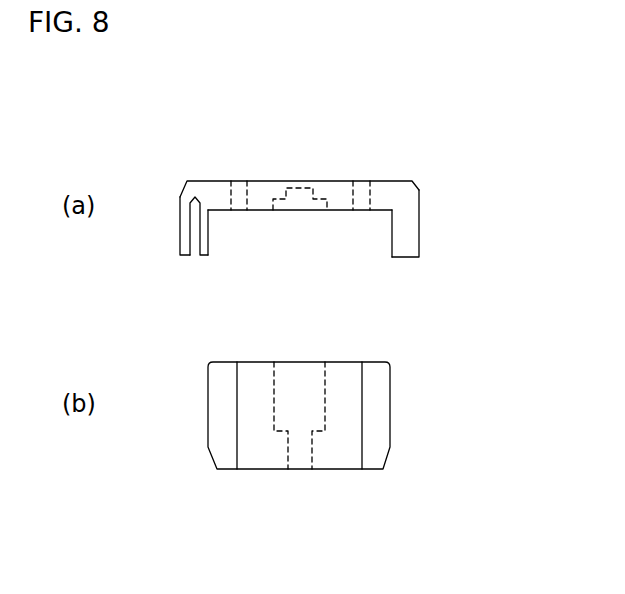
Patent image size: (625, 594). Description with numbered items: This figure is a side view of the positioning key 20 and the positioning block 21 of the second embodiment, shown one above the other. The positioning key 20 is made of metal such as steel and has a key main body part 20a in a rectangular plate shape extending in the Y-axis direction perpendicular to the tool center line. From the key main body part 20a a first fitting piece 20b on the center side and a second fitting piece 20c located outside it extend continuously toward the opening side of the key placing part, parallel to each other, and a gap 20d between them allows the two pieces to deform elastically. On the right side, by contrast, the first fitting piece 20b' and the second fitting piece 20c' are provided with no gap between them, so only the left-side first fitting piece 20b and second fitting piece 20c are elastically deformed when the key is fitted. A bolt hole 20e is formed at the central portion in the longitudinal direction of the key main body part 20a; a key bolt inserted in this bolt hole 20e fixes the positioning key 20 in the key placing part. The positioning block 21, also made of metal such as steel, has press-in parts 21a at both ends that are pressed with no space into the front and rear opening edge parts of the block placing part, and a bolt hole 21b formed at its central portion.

The positioning key 20 is at (317, 206).
The key main body part 20a is at (263, 181).
The first fitting piece 20b is at (243, 255).
The first fitting piece 20b' is at (371, 254).
The second fitting piece 20c is at (148, 241).
The second fitting piece 20c' is at (460, 231).
The gap 20d is at (196, 257).
The bolt hole 20e is at (305, 181).
The positioning block 21 is at (304, 430).
The press-in part 21a is at (390, 388).
The bolt hole 21b is at (313, 442).